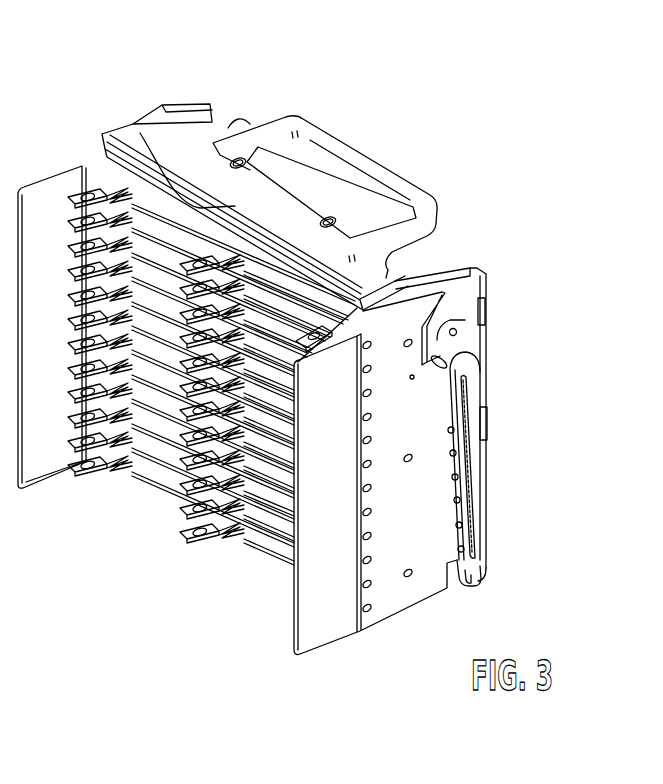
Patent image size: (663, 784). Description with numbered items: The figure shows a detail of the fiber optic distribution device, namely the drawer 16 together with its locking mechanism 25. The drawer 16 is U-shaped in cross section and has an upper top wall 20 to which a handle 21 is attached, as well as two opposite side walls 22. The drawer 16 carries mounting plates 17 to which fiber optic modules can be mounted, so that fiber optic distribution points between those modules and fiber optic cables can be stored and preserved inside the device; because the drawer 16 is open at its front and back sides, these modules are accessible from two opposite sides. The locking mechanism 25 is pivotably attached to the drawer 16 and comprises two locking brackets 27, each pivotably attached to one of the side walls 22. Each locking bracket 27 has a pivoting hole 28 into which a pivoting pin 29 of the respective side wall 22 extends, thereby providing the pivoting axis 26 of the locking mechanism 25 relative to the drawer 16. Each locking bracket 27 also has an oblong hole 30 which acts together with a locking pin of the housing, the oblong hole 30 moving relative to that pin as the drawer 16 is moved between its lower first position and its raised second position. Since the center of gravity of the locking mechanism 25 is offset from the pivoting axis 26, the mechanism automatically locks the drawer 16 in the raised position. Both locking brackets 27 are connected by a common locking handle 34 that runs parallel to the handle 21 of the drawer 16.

The drawer 16 is at (441, 144).
The mounting plates 17 is at (262, 462).
The upper top wall 20 is at (412, 258).
The handle 21 is at (353, 147).
The side walls 22 is at (402, 583).
The locking mechanism 25 is at (163, 106).
The pivoting axis 26 is at (429, 377).
The locking bracket 27 is at (481, 587).
The pivoting hole 28 is at (468, 320).
The pivoting pin 29 is at (448, 352).
The oblong hole 30 is at (468, 498).
The locking handle 34 is at (155, 172).